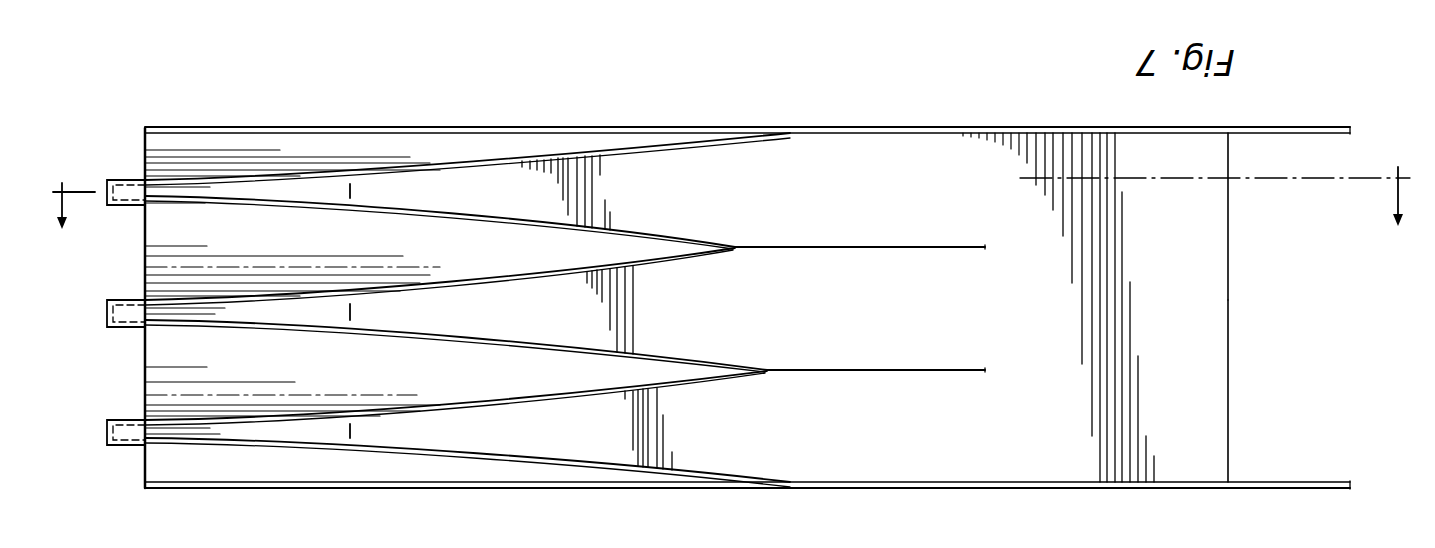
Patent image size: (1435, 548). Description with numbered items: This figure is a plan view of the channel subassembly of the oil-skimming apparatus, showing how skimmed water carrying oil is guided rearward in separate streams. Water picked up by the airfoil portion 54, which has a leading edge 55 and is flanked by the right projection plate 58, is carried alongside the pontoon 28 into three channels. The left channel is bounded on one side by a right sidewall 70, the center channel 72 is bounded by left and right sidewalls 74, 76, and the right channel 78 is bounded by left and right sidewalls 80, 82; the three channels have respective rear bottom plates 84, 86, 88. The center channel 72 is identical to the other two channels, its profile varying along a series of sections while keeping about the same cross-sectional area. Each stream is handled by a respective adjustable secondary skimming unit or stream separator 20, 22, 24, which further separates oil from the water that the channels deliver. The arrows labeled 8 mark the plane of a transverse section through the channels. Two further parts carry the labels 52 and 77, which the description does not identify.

The section line 8- 8 is at (729, 214).
The secondary skimming unit 20 is at (113, 206).
The secondary skimming unit 22 is at (113, 328).
The secondary skimming unit 24 is at (112, 446).
The pontoon 28 is at (509, 163).
The top housing wall 52 is at (1327, 135).
The airfoil portion 54 is at (1198, 344).
The leading edge 55 is at (1230, 297).
The right projection plate 58 is at (1323, 480).
The right sidewall 70 is at (493, 215).
The center channel 72 is at (893, 287).
The left sidewall 74 is at (577, 270).
The right sidewall 76 is at (549, 343).
The upper outlet chamber 77 is at (880, 176).
The right channel 78 is at (876, 417).
The left sidewall 80 is at (592, 394).
The right sidewall 82 is at (556, 460).
The rear bottom plate 84 is at (292, 198).
The rear bottom plate 86 is at (303, 322).
The rear bottom plate 88 is at (305, 437).